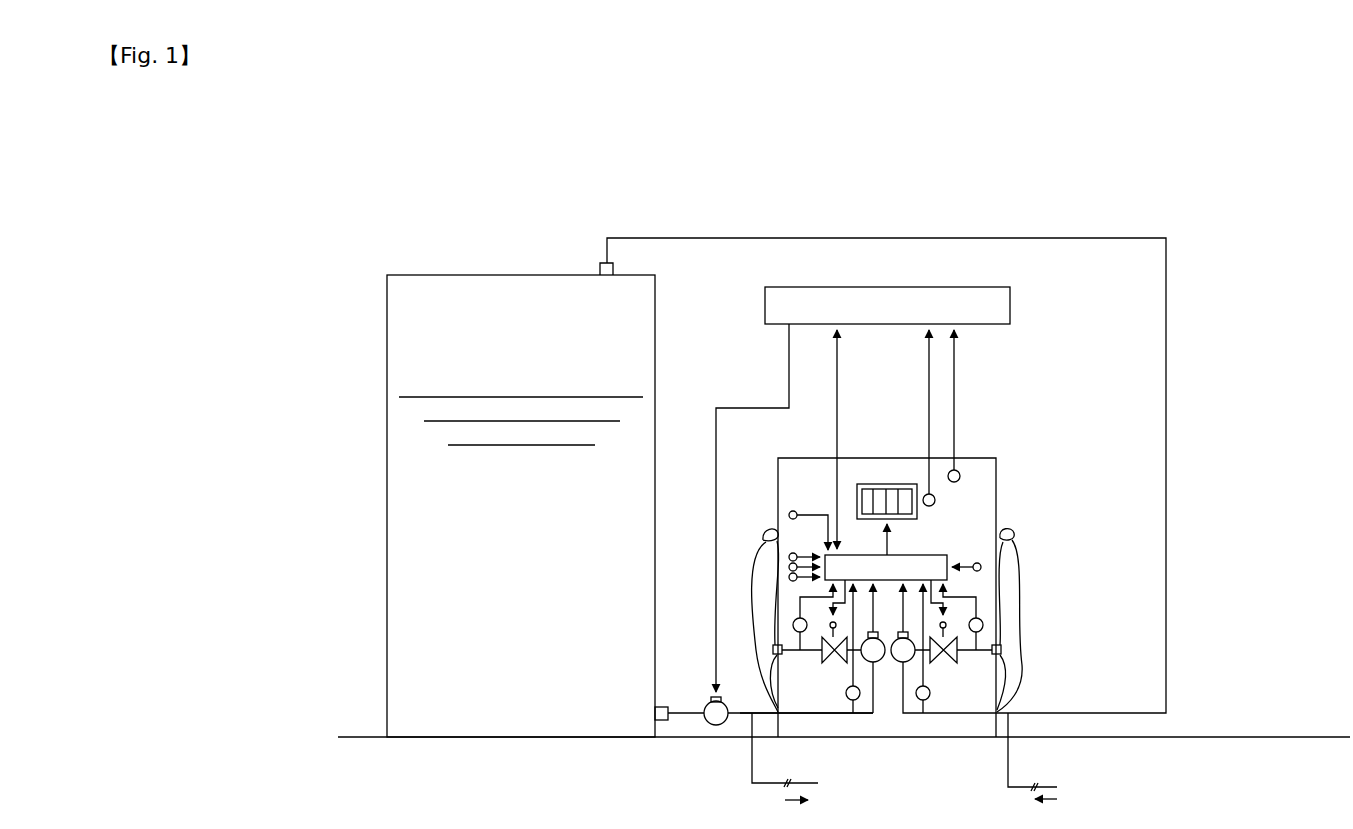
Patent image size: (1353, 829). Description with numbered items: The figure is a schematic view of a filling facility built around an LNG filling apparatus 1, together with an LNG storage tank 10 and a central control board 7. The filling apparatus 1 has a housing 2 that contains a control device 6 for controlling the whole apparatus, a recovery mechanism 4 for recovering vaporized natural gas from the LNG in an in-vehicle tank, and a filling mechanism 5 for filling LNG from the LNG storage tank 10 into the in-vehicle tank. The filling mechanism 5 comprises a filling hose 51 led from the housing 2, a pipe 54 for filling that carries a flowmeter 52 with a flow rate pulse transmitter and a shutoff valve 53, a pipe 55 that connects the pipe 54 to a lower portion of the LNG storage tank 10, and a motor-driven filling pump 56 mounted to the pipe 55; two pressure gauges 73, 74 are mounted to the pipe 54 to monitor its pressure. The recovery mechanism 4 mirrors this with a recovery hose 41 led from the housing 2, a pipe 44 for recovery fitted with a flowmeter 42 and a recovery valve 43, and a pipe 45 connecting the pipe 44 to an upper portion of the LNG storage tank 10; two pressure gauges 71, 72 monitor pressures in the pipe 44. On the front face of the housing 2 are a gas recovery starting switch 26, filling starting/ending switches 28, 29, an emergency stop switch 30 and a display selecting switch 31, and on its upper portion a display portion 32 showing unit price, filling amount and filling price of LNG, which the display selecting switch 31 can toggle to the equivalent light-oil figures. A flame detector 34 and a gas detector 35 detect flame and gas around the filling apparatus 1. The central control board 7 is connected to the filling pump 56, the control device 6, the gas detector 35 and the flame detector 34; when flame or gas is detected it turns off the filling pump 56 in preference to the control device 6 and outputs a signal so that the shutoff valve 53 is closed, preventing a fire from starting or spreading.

The filling apparatus 1 is at (1012, 449).
The housing 2 is at (805, 456).
The recovery mechanism 4 is at (1032, 644).
The filling mechanism 5 is at (699, 665).
The control device 6 is at (900, 554).
The central control board 7 is at (947, 287).
The LNG storage tank 10 is at (450, 275).
The gas recovery starting switch 26 is at (977, 562).
The filling starting/ending switch 28 is at (791, 553).
The filling starting/ending switch 29 is at (789, 566).
The emergency stop switch 30 is at (789, 580).
The display selecting switch 31 is at (792, 510).
The display portion 32 is at (880, 498).
The flame detector 34 is at (958, 470).
The gas detector 35 is at (924, 494).
The recovery hose 41 is at (1018, 570).
The flowmeter 42 is at (918, 658).
The recovery valve 43 is at (1004, 672).
The pipe for recovery 44 is at (903, 664).
The pipe 45 is at (1166, 635).
The filling hose 51 is at (758, 632).
The flowmeter 52 is at (862, 662).
The shutoff valve 53 is at (821, 645).
The pipe for filling 54 is at (848, 716).
The pipe 55 is at (681, 737).
The filling pump 56 is at (707, 727).
The pressure gauge 71 is at (982, 622).
The pressure gauge 72 is at (929, 700).
The pressure gauge 73 is at (794, 620).
The pressure gauge 74 is at (850, 700).